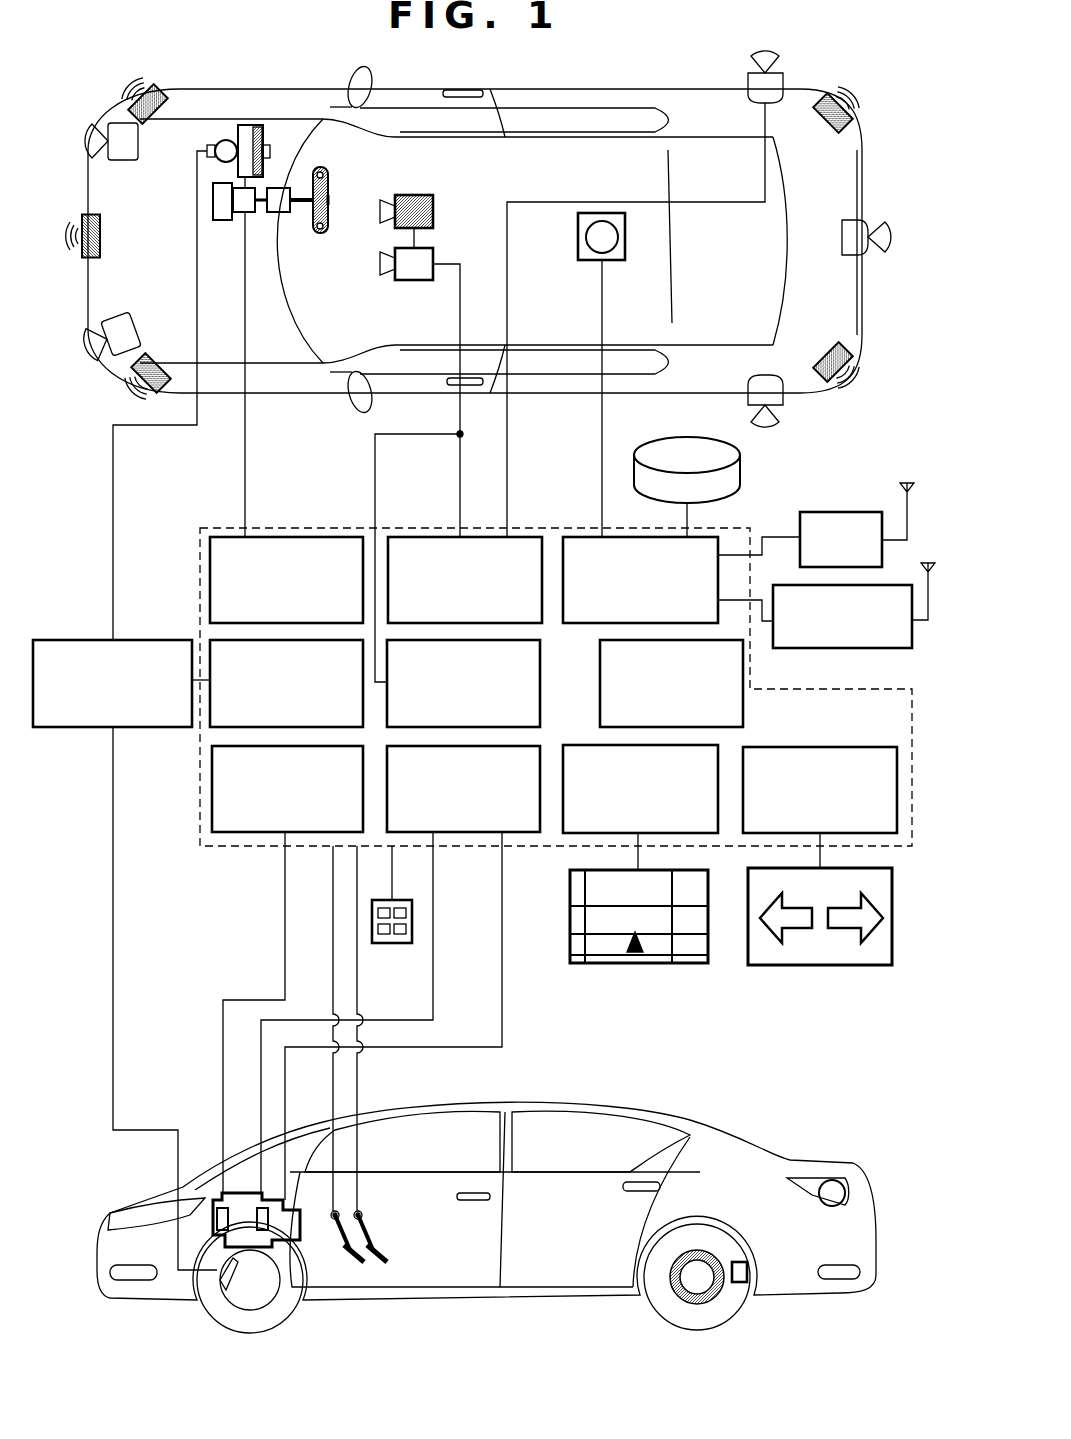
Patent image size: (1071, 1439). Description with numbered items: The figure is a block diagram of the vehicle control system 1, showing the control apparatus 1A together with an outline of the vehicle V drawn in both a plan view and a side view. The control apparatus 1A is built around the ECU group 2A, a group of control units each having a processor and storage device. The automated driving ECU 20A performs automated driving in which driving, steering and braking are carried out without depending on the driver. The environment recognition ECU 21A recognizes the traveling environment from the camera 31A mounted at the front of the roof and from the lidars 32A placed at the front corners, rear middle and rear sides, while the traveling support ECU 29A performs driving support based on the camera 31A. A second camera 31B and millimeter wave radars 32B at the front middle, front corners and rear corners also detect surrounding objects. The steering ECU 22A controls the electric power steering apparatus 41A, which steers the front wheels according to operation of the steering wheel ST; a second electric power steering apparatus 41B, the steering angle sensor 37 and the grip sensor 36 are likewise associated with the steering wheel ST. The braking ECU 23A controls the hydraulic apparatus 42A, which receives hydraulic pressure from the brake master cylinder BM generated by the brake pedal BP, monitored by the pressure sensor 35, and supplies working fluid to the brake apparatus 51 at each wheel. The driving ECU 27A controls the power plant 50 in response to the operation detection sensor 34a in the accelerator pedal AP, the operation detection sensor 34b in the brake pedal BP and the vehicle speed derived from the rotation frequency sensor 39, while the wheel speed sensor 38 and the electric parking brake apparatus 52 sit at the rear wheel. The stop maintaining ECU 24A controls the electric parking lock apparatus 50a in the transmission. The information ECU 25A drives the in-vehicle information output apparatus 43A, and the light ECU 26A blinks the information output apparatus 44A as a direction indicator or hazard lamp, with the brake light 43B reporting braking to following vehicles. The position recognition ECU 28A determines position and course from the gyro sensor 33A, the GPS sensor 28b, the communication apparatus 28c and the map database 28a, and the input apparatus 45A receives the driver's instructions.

The vehicle control system 1 is at (878, 390).
The control apparatus 1A is at (862, 480).
The vehicle V is at (882, 142).
The ECU group 2A is at (335, 528).
The automated driving ECU 20A is at (752, 676).
The environment recognition ECU 21A is at (526, 537).
The steering ECU 22A is at (286, 537).
The braking ECU 23A is at (218, 730).
The stop maintaining ECU 24A is at (250, 846).
The information ECU 25A is at (578, 846).
The light ECU 26A is at (856, 747).
The driving ECU 27A is at (470, 846).
The position recognition ECU 28A is at (720, 537).
The database 28a is at (666, 438).
The GPS sensor 28b is at (838, 512).
The communication apparatus 28c is at (857, 648).
The traveling support ECU 29A is at (566, 672).
The camera 31A is at (405, 282).
The camera 31B is at (433, 207).
The lidar 32A is at (122, 160).
The radar 32B is at (155, 88).
The gyro sensor 33A is at (585, 260).
The operation detection sensor 34a is at (333, 1210).
The operation detection sensor 34b is at (362, 1214).
The pressure sensor 35 is at (250, 125).
The sensor 36 is at (330, 190).
The steering angle sensor 37 is at (222, 220).
The wheel speed sensor 38 is at (740, 1285).
The rotation frequency sensor 39 is at (257, 1208).
The electric power steering apparatus 41A is at (250, 212).
The electric power steering apparatus 41B is at (280, 188).
The hydraulic apparatus 42A is at (84, 640).
The information output apparatus 43A is at (660, 963).
The information output apparatus 43B is at (833, 1180).
The information output apparatus 44A is at (830, 965).
The input apparatus 45A is at (395, 943).
The power plant 50 is at (290, 1250).
The electric parking lock apparatus 50a is at (215, 1205).
The brake apparatus 51 is at (230, 1285).
The electric parking brake apparatus 52 is at (690, 1300).
The accelerator pedal AP is at (364, 1262).
The brake pedal BP is at (387, 1262).
The brake master cylinder BM is at (226, 140).
The steering wheel ST is at (320, 168).